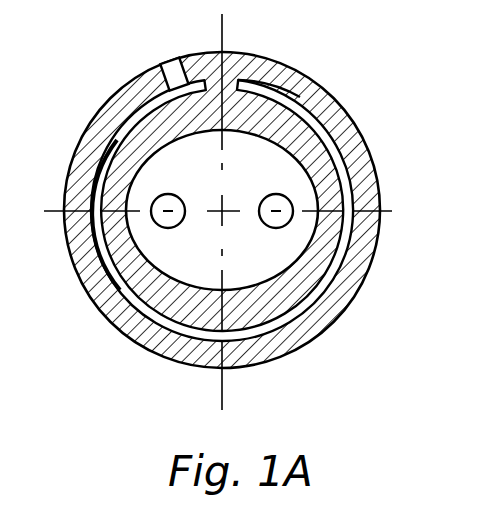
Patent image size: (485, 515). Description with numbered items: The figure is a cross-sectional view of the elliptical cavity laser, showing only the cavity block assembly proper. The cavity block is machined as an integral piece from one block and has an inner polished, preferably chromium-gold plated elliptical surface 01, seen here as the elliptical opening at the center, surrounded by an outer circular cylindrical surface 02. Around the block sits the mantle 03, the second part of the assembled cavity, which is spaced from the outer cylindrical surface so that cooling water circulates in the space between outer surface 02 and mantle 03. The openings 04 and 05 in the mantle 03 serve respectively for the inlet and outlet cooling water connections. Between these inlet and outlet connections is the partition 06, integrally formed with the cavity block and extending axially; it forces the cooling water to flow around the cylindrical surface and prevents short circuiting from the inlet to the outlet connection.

The elliptical surface 01 is at (312, 184).
The outer circular cylindrical surface 02 is at (318, 130).
The mantle 03 is at (338, 95).
The opening for inlet cooling water connection 04 is at (276, 68).
The opening for outlet cooling water connection 05 is at (170, 58).
The partition 06 is at (268, 74).